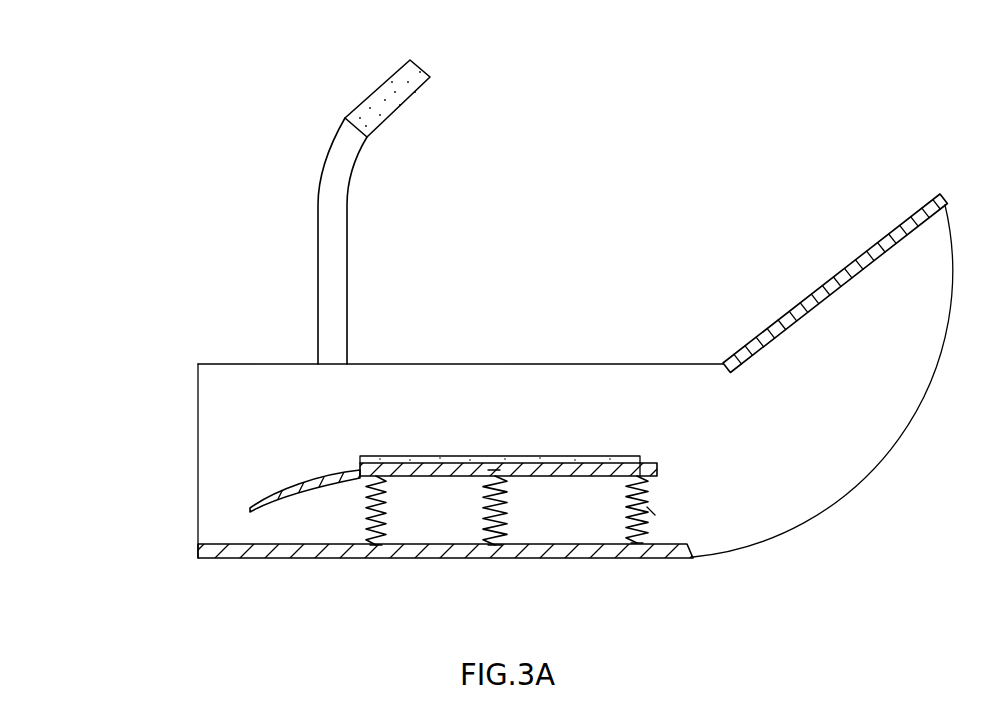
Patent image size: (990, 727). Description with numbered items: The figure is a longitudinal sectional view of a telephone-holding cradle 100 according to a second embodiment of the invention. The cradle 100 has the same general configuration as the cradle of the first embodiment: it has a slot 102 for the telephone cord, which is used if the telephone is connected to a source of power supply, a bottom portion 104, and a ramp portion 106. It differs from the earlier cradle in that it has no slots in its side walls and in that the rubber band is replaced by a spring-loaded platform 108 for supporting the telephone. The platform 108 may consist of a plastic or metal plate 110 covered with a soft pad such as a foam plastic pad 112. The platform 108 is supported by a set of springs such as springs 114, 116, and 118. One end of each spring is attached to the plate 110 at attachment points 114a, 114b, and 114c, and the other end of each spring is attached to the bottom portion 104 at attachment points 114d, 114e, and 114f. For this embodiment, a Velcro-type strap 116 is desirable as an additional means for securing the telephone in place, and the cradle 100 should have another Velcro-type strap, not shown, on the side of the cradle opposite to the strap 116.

The cradle 100 is at (492, 170).
The slot 102 is at (196, 468).
The bottom portion 104 is at (422, 557).
The ramp portion 106 is at (875, 242).
The spring-loaded platform 108 is at (575, 408).
The plate 110 is at (565, 477).
The foam plastic pad 112 is at (385, 457).
The spring 114 is at (365, 507).
The spring attachment point 114a is at (360, 458).
The spring attachment point 114b is at (488, 470).
The spring attachment point 114c is at (643, 460).
The spring attachment point 114d is at (378, 543).
The spring attachment point 114e is at (492, 543).
The spring attachment point 114f is at (640, 545).
The strap 116 is at (350, 160).
The spring 118 is at (647, 507).